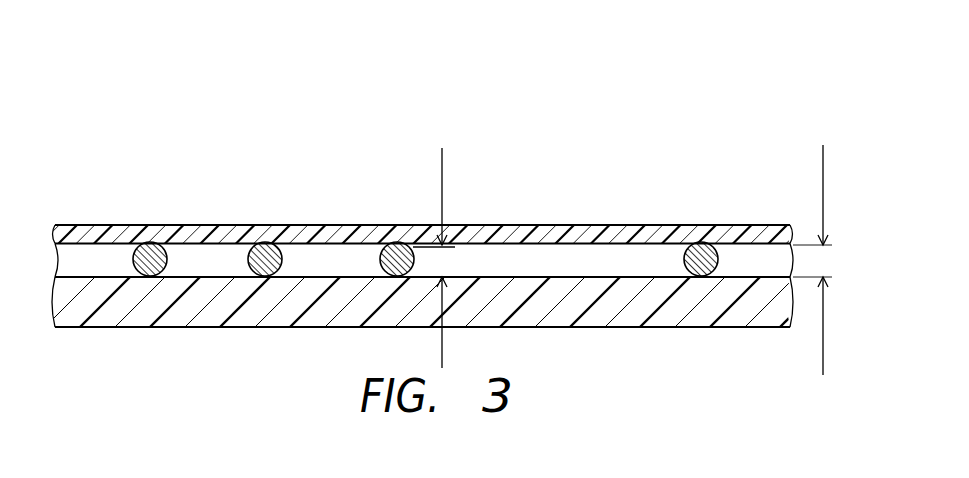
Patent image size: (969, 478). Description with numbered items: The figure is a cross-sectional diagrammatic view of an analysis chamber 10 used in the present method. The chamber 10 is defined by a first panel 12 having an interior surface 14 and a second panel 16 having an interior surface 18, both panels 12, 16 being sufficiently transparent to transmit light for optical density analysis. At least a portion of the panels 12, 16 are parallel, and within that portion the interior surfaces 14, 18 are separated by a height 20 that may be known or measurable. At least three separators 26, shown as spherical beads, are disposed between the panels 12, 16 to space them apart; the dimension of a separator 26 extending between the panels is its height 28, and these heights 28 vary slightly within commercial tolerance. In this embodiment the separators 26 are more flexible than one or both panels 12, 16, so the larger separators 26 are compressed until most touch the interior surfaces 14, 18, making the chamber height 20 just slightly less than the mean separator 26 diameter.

The analysis chamber 10 is at (436, 271).
The first panel 12 is at (158, 225).
The interior surface 14 is at (632, 252).
The second panel 16 is at (157, 328).
The interior surface 18 is at (582, 277).
The height 20 is at (823, 192).
The separators 26 is at (168, 258).
The height of the separator 28 is at (441, 185).